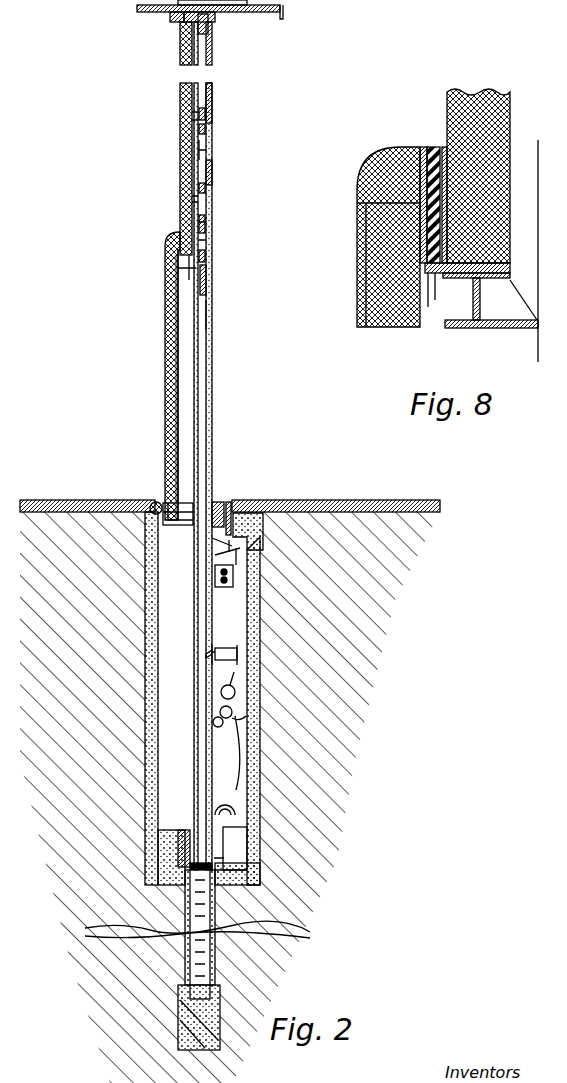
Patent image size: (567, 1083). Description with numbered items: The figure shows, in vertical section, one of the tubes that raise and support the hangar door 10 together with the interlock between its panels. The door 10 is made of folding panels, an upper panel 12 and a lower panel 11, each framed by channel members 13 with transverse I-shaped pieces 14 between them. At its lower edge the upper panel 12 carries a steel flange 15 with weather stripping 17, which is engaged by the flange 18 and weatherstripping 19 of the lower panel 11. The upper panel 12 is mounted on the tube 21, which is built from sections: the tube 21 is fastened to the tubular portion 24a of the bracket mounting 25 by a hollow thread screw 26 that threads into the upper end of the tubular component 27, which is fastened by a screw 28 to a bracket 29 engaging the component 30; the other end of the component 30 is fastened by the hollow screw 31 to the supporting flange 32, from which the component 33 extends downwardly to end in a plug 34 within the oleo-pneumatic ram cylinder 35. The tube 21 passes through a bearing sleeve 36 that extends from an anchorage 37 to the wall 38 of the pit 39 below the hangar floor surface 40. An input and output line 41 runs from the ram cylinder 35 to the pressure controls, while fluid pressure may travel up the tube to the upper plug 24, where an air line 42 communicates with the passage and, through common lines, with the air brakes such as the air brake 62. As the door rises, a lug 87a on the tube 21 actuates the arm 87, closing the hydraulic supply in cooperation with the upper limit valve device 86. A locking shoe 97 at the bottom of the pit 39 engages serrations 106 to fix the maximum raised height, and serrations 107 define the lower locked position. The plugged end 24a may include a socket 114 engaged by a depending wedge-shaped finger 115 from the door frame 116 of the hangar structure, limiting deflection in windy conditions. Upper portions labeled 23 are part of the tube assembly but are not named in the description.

In FIG. 2, the door 10 is at (160, 280).
In FIG. 2, the lower panel 11 is at (160, 336).
In FIG. 8, the lower panel 11 is at (352, 282).
In FIG. 2, the upper panel 12 is at (176, 153).
In FIG. 8, the upper panel 12 is at (478, 88).
In FIG. 2, the channel members 13 is at (183, 500).
In FIG. 2, the I-shaped pieces 14 is at (168, 290).
In FIG. 8, the steel flange 15 is at (437, 275).
In FIG. 8, the weather stripping 17 is at (431, 290).
In FIG. 8, the flange 18 is at (436, 148).
In FIG. 8, the weatherstripping 19 is at (425, 150).
In FIG. 2, the tube 21 is at (218, 388).
In FIG. 2, the tube upper section 23 is at (214, 92).
In FIG. 2, the upper plug 24 is at (205, 118).
In FIG. 2, the tubular portion 24a is at (212, 38).
In FIG. 2, the bracket mounting 25 is at (192, 112).
In FIG. 2, the hollow thread screw 26 is at (207, 150).
In FIG. 2, the tubular component 27 is at (212, 172).
In FIG. 2, the screw 28 is at (212, 190).
In FIG. 2, the bracket 29 is at (188, 198).
In FIG. 2, the component 30 is at (214, 233).
In FIG. 2, the hollow screw 31 is at (212, 296).
In FIG. 2, the supporting flange 32 is at (183, 272).
In FIG. 8, the supporting flange 32 is at (455, 328).
In FIG. 2, the component 33 is at (213, 318).
In FIG. 2, the plug 34 is at (186, 890).
In FIG. 2, the ram cylinder 35 is at (220, 970).
In FIG. 2, the bearing sleeve 36 is at (216, 505).
In FIG. 2, the anchorage 37 is at (231, 510).
In FIG. 2, the wall 38 is at (240, 528).
In FIG. 2, the pit 39 is at (162, 652).
In FIG. 2, the floor surface 40 is at (46, 500).
In FIG. 2, the input and output line 41 is at (246, 805).
In FIG. 2, the air line 42 is at (183, 47).
In FIG. 2, the air brake 62 is at (232, 655).
In FIG. 2, the upper limit valve device 86 is at (240, 580).
In FIG. 2, the arm 87 is at (211, 538).
In FIG. 2, the lug 87a is at (215, 557).
In FIG. 2, the locking shoe 97 is at (221, 800).
In FIG. 2, the serrations 106 is at (190, 808).
In FIG. 2, the serrations 107 is at (214, 258).
In FIG. 2, the socket 114 is at (198, 24).
In FIG. 2, the finger 115 is at (172, 20).
In FIG. 2, the door frame 116 is at (148, 14).